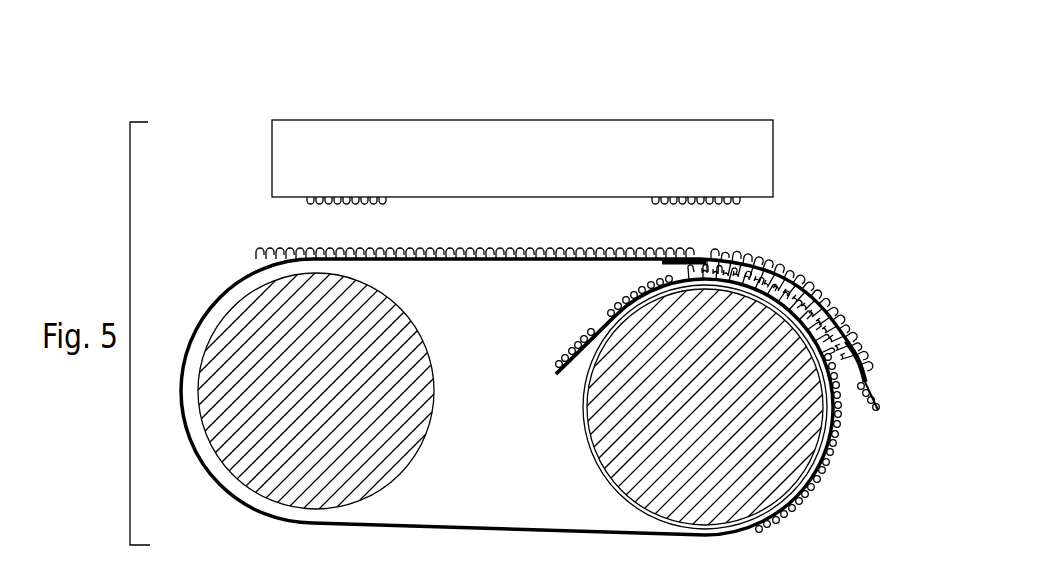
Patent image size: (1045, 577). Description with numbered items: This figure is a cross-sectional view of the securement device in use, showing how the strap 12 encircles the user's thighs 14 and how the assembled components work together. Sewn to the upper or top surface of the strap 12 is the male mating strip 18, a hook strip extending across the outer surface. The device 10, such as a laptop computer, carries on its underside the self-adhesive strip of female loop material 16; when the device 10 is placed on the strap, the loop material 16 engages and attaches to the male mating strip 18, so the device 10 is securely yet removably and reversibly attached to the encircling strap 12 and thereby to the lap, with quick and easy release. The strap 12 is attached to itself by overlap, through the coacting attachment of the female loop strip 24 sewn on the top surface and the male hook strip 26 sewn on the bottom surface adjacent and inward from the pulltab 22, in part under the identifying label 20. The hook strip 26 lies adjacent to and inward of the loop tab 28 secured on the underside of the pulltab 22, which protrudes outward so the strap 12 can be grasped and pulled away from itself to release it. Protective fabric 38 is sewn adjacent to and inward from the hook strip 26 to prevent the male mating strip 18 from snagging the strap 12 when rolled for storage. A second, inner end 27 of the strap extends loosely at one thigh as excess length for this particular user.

The device 10 is at (508, 120).
The strap 12 is at (215, 290).
The thighs 14 is at (437, 398).
The self-adhesive strip of female loop material 16 is at (306, 200).
The male mating strip 18 is at (263, 252).
The identifying label 20 is at (856, 364).
The pulltab 22 is at (873, 396).
The loop strip 24 is at (808, 490).
The hook strip 26 is at (848, 376).
The inner end 27 is at (560, 372).
The loop tab 28 is at (869, 412).
The fabric 38 is at (668, 262).